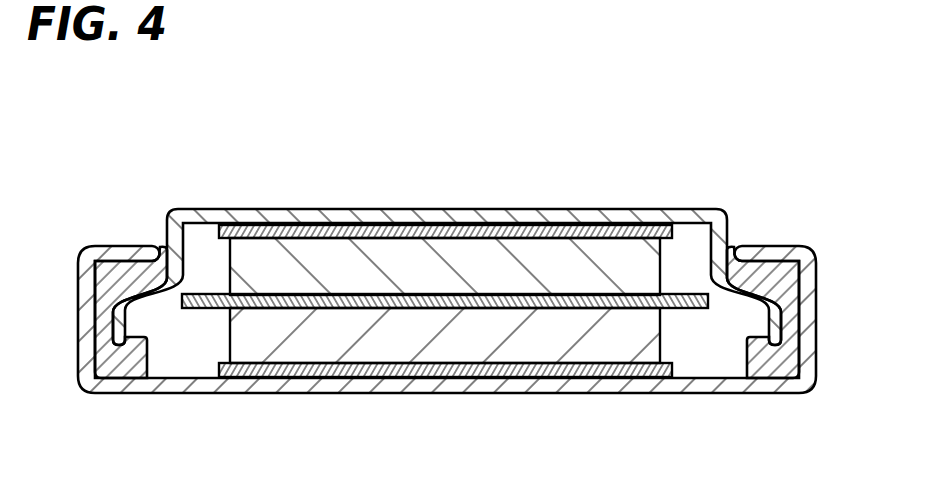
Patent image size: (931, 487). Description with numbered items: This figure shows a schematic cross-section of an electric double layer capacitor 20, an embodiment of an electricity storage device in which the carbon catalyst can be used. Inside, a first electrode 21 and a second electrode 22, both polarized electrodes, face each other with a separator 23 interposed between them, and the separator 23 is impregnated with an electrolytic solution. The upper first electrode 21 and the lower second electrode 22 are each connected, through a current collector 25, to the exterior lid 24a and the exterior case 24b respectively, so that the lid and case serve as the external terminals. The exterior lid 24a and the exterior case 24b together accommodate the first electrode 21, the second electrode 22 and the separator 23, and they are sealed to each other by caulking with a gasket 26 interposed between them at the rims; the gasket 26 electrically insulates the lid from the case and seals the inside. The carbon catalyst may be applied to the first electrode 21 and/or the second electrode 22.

The electric double layer capacitor 20 is at (139, 134).
The first electrode 21 is at (495, 253).
The second electrode 22 is at (511, 353).
The separator 23 is at (620, 294).
The exterior lid 24a is at (250, 209).
The exterior case 24b is at (252, 393).
The current collector 25 is at (362, 226).
The gasket 26 is at (123, 368).